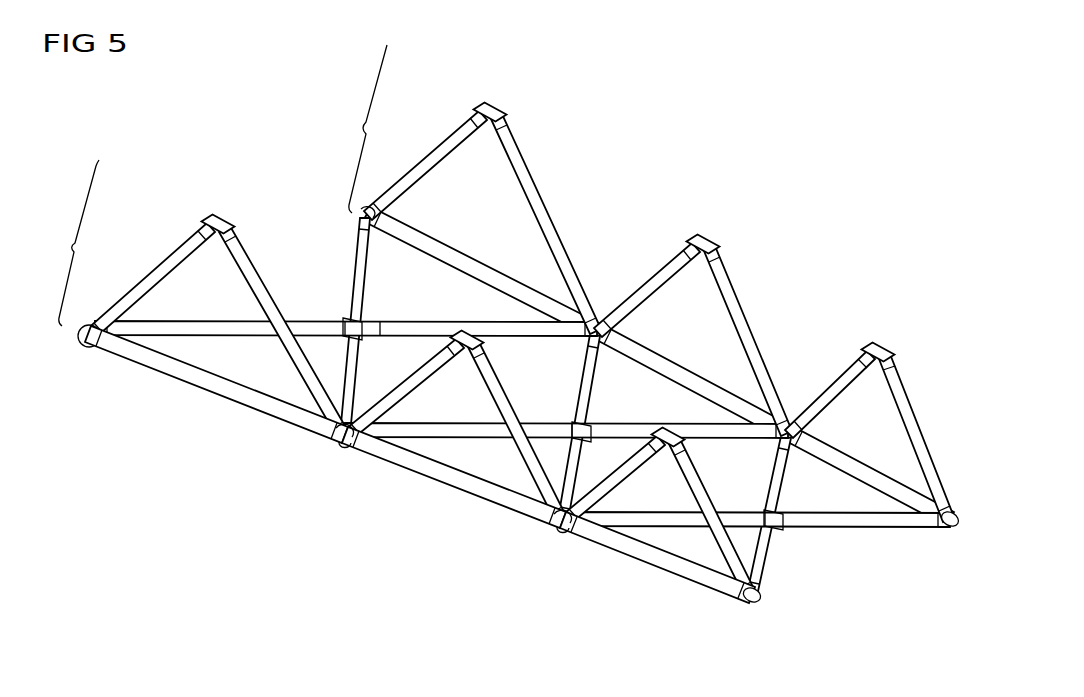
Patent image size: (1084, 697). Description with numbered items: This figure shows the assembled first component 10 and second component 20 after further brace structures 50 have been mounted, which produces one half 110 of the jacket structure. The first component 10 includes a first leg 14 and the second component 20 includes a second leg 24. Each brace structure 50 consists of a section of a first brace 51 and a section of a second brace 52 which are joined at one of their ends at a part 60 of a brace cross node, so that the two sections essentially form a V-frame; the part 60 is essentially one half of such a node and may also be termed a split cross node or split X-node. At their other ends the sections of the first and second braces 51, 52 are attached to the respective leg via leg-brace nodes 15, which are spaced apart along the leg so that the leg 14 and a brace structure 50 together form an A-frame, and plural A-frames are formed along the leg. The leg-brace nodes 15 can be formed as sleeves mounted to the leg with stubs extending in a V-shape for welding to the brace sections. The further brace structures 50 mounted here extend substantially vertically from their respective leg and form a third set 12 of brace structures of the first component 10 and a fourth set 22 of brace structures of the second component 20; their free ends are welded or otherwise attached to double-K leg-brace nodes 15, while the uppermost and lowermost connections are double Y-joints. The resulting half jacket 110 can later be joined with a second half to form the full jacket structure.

The first component 10 is at (763, 605).
The third set of brace structures 12 is at (70, 243).
The first leg 14 is at (468, 485).
The leg-brace nodes 15 is at (333, 433).
The second component 20 is at (952, 533).
The fourth set of brace structures 22 is at (357, 131).
The second leg 24 is at (672, 372).
The brace structure 50 is at (161, 245).
The first brace 51 is at (167, 262).
The second brace 52 is at (263, 297).
The part of a brace cross node 60 is at (222, 216).
The half of the jacket structure 110 is at (226, 522).